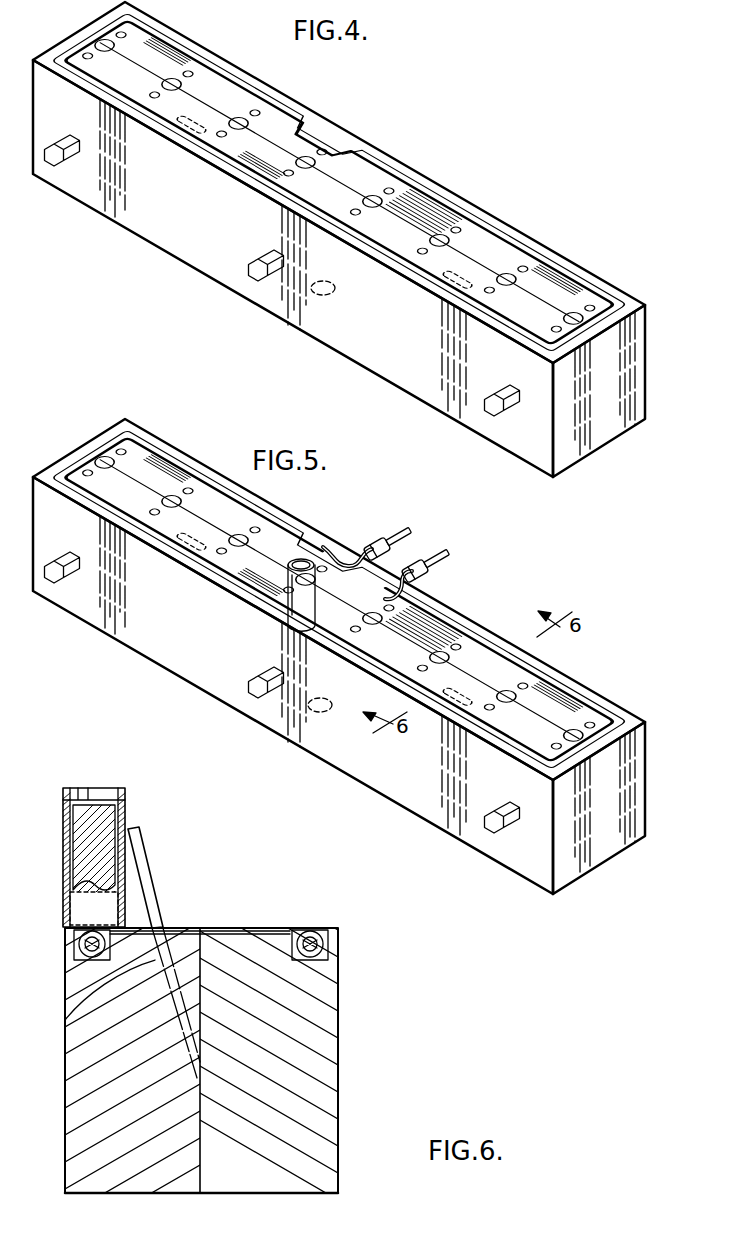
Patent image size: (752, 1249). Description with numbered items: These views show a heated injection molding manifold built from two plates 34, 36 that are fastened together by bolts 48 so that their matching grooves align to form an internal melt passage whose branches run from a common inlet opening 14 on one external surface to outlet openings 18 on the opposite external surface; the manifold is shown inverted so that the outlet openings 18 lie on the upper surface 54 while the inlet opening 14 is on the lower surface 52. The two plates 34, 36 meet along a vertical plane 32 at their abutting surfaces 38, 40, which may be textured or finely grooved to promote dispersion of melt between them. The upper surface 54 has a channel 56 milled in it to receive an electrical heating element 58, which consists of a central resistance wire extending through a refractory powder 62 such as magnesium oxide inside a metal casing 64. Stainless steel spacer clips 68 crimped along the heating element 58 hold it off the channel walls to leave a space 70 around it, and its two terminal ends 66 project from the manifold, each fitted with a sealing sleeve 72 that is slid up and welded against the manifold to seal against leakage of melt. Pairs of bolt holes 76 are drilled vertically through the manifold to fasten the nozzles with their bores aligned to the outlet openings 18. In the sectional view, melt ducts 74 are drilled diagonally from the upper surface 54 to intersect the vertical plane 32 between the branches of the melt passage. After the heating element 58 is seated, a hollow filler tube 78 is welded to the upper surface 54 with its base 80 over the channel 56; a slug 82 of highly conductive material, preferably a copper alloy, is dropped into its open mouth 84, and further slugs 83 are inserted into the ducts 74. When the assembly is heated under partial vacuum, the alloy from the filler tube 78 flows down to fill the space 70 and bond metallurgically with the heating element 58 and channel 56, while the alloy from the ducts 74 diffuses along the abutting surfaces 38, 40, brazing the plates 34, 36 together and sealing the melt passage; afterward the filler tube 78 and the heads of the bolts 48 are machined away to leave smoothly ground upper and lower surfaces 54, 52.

In FIG. 5, the inlet opening 14 is at (308, 708).
In FIG. 4, the outlet openings 18 is at (503, 273).
In FIG. 5, the outlet openings 18 is at (236, 533).
In FIG. 5, the vertical plane 32 is at (597, 833).
In FIG. 4, the plate 34 is at (640, 337).
In FIG. 6, the plate 34 is at (327, 1062).
In FIG. 4, the plate 36 is at (570, 452).
In FIG. 6, the plate 36 is at (78, 1096).
In FIG. 6, the abutting surface 38 is at (200, 950).
In FIG. 6, the abutting surface 40 is at (186, 947).
In FIG. 4, the bolts 48 is at (50, 170).
In FIG. 5, the bolts 48 is at (484, 840).
In FIG. 6, the lower surface 52 is at (313, 1194).
In FIG. 4, the upper surface 54 is at (533, 276).
In FIG. 6, the upper surface 54 is at (250, 928).
In FIG. 4, the channel 56 is at (288, 107).
In FIG. 6, the channel 56 is at (300, 928).
In FIG. 5, the electrical heating element 58 is at (443, 617).
In FIG. 6, the refractory powder 62 is at (317, 934).
In FIG. 6, the metal casing 64 is at (327, 941).
In FIG. 5, the terminal ends 66 is at (435, 560).
In FIG. 6, the spacer clips 68 is at (333, 952).
In FIG. 6, the space 70 is at (79, 942).
In FIG. 5, the sealing sleeves 72 is at (377, 541).
In FIG. 6, the melt ducts 74 is at (65, 1021).
In FIG. 5, the bolt holes 76 is at (587, 721).
In FIG. 5, the filler tube 78 is at (288, 626).
In FIG. 6, the filler tube 78 is at (68, 799).
In FIG. 6, the base 80 is at (63, 926).
In FIG. 6, the slug 82 is at (87, 840).
In FIG. 6, the slugs 83 is at (140, 867).
In FIG. 6, the open mouth 84 is at (100, 788).